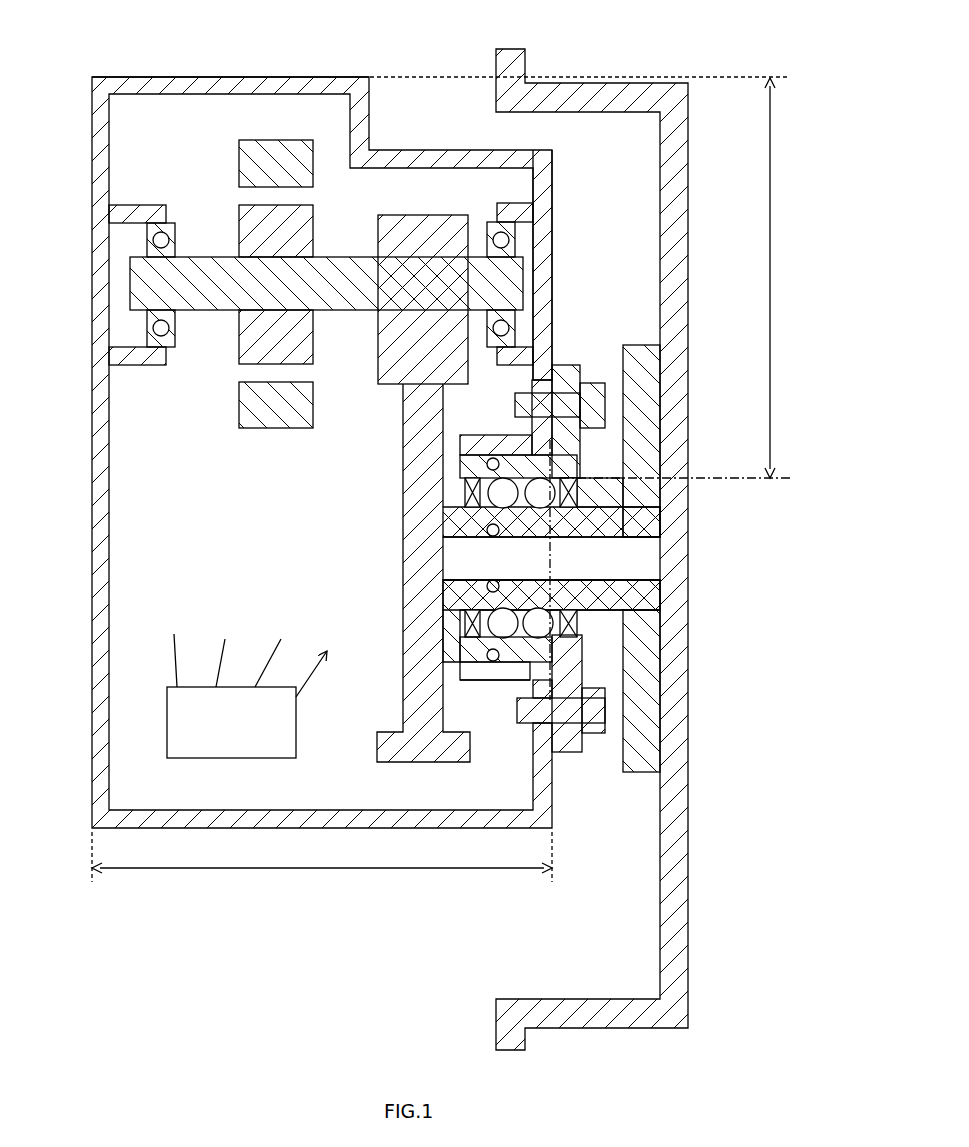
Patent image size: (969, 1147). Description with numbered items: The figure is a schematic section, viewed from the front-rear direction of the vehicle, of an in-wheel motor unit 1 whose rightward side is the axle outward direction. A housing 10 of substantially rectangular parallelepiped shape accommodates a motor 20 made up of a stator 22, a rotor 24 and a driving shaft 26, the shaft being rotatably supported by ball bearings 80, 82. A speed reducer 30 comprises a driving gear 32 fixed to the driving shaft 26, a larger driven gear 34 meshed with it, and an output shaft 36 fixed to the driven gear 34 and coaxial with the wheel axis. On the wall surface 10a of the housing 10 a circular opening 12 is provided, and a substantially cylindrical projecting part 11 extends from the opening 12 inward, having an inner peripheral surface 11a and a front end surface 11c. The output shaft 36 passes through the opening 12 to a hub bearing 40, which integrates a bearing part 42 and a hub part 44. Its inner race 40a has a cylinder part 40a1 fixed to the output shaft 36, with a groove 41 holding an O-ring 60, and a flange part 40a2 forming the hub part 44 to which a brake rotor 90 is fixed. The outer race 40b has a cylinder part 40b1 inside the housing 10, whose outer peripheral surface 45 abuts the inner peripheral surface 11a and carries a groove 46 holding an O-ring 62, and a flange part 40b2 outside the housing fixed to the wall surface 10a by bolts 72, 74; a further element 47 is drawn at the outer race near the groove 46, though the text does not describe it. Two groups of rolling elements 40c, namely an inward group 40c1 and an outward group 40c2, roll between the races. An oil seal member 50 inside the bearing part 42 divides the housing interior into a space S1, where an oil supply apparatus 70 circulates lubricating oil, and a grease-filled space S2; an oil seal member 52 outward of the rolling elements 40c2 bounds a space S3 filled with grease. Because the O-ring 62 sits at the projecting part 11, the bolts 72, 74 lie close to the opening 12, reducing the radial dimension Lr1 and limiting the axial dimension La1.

The in-wheel motor unit 1 is at (207, 58).
The housing 10 is at (92, 116).
The wall surface 10a is at (552, 240).
The projecting part 11 is at (502, 440).
The inner peripheral surface 11a is at (463, 450).
The front end surface 11c is at (487, 462).
The opening 12 is at (578, 456).
The motor 20 is at (326, 221).
The stator 22 is at (300, 147).
The rotor 24 is at (300, 228).
The driving shaft 26 is at (357, 265).
The speed reducer 30 is at (485, 432).
The driving gear 32 is at (430, 222).
The driven gear 34 is at (386, 450).
The output shaft 36 is at (490, 549).
The hub bearing 40 is at (548, 714).
The inner race 40a is at (577, 701).
The cylinder part 40a1 is at (560, 568).
The flange part 40a2 is at (679, 713).
The outer race 40b is at (527, 723).
The cylinder part 40b1 is at (512, 724).
The flange part 40b2 is at (552, 745).
The rolling elements 40c is at (428, 636).
The rolling elements 40c1 is at (497, 621).
The rolling elements 40c2 is at (497, 646).
The groove 41 is at (470, 590).
The bearing part 42 is at (566, 781).
The hub part 44 is at (641, 796).
The outer peripheral surface 45 is at (478, 672).
The groove 46 is at (487, 681).
The seal holder 47 is at (470, 652).
The oil seal member 50 is at (447, 492).
The oil seal member 52 is at (640, 511).
The O-ring 60 is at (490, 580).
The O-ring 62 is at (493, 662).
The oil supply apparatus 70 is at (226, 745).
The bolt 72 is at (591, 384).
The bolt 74 is at (592, 733).
The ball bearing 80 is at (130, 213).
The ball bearing 82 is at (530, 212).
The brake rotor 90 is at (688, 207).
The space S1 is at (167, 551).
The space S2 is at (582, 470).
The space S3 is at (577, 490).
The radial dimension Lr1 is at (589, 277).
The axial dimension La1 is at (322, 864).